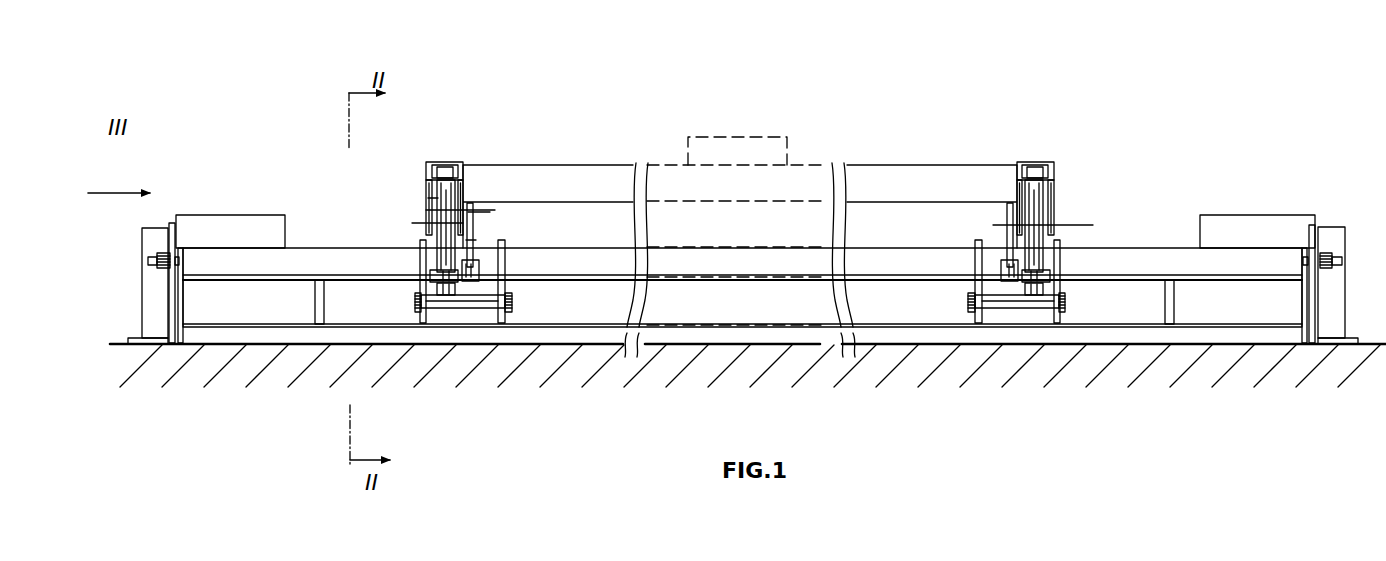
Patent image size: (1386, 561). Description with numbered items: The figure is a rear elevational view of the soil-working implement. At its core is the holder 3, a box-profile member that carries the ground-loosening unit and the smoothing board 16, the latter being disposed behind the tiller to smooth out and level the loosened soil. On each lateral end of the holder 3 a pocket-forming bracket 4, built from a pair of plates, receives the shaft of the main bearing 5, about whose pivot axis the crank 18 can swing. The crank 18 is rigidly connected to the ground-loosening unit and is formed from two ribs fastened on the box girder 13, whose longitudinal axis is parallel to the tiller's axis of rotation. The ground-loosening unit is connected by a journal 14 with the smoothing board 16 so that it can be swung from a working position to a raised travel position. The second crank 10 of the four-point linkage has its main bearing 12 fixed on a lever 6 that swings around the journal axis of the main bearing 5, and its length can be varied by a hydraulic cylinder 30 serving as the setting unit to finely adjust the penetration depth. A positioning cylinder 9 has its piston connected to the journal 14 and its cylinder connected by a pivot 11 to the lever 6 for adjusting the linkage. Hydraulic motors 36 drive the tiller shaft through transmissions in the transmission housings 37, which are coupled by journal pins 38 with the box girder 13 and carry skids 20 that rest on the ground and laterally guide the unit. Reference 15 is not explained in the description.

The holder 3 is at (597, 175).
The bracket 4 is at (452, 163).
The main bearing 5 is at (1073, 224).
The lever 6 is at (428, 183).
The positioning cylinder 9 is at (435, 223).
The second crank 10 is at (472, 240).
The pivot 11 is at (432, 198).
The main bearing of the second crank 12 is at (478, 203).
The box girder 13 is at (320, 258).
The journal 14 is at (430, 318).
The clamp 15 is at (470, 212).
The smoothing board 16 is at (538, 330).
The crank 18 is at (425, 262).
The skids 20 is at (157, 339).
The hydraulic cylinder 30 is at (480, 265).
The hydraulic motors 36 is at (252, 222).
The transmission housings 37 is at (162, 220).
The journal pins 38 is at (173, 258).